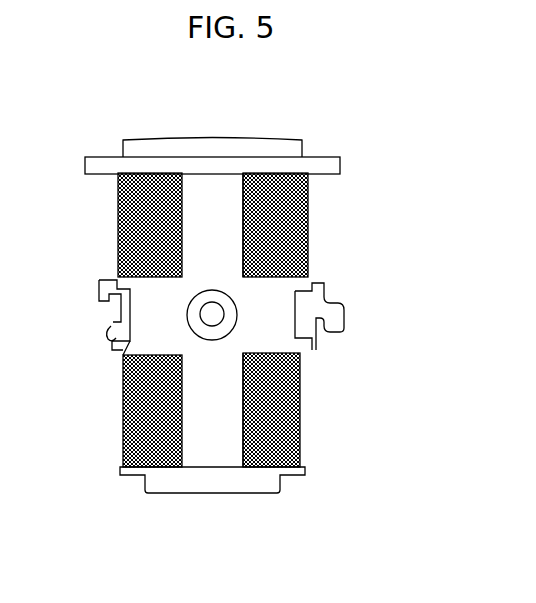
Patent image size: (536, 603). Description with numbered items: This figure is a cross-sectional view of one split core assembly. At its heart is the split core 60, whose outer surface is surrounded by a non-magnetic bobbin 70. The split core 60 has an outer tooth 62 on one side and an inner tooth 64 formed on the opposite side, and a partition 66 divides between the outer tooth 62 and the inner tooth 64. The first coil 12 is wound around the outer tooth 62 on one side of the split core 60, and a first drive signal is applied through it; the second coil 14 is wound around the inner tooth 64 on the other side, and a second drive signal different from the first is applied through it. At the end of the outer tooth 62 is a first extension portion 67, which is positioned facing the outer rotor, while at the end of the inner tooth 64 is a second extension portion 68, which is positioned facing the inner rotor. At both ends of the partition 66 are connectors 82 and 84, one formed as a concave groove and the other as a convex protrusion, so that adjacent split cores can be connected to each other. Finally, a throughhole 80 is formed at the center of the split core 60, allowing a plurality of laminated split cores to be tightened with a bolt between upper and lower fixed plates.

The first coil 12 is at (310, 245).
The second coil 14 is at (300, 422).
The split core 60 is at (253, 147).
The outer tooth 62 is at (226, 216).
The inner tooth 64 is at (230, 398).
The partition 66 is at (150, 335).
The first extension portion 67 is at (178, 148).
The second extension portion 68 is at (218, 493).
The non-magnetic bobbin 70 is at (330, 165).
The throughhole 80 is at (213, 316).
The connector 82 is at (112, 326).
The connector 84 is at (334, 305).